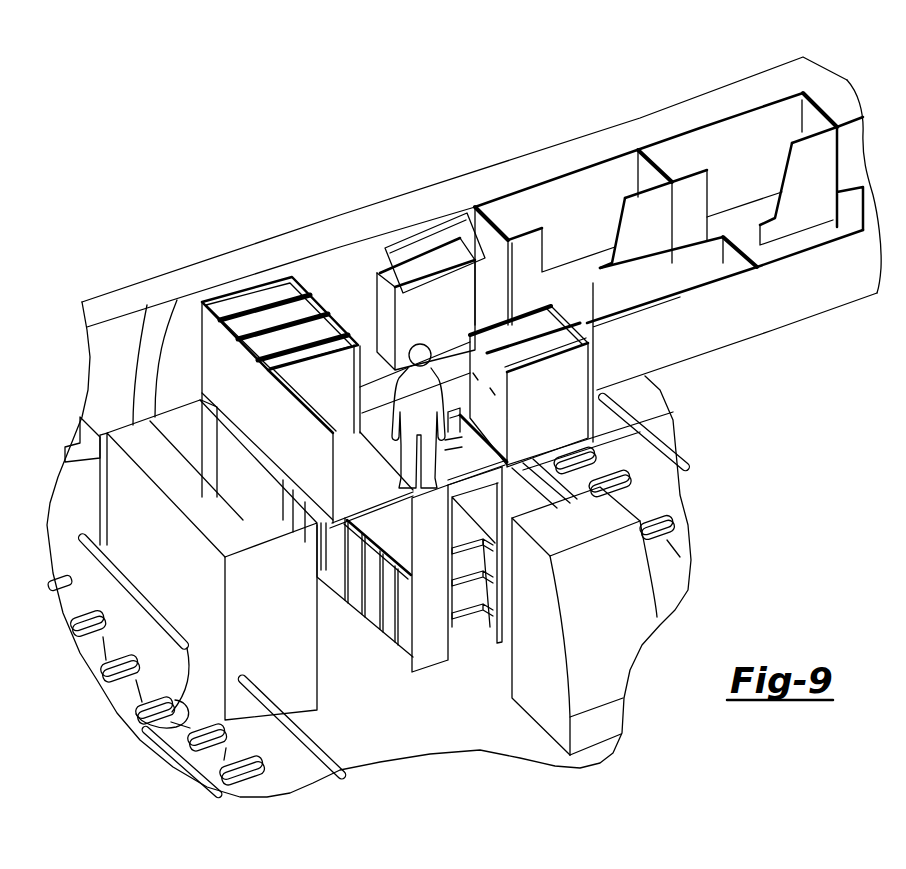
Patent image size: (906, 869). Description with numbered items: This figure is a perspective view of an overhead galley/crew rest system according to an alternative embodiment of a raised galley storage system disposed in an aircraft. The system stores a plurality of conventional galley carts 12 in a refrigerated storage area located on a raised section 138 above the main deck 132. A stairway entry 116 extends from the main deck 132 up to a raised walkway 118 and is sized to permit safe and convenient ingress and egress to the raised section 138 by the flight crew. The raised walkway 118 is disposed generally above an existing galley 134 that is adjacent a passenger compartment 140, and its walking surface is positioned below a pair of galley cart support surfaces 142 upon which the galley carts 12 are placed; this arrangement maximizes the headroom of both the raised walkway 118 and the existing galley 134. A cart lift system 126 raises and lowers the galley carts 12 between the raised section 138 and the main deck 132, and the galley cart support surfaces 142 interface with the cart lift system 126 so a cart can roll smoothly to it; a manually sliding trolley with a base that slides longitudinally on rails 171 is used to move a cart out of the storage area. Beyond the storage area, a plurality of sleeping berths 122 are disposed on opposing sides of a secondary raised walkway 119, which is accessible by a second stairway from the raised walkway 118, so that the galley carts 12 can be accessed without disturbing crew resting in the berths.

The galley cart 12 is at (238, 297).
The stairway entry 116 is at (467, 612).
The raised walkway 118 is at (457, 537).
The secondary raised walkway 119 is at (458, 413).
The sleeping berths 122 is at (573, 205).
The cart lift system 126 is at (337, 275).
The main deck 132 is at (363, 661).
The existing galley 134 is at (327, 607).
The raised section 138 is at (357, 459).
The passenger compartment 140 is at (150, 584).
The galley cart support surfaces 142 is at (378, 497).
The rails 171 is at (397, 478).